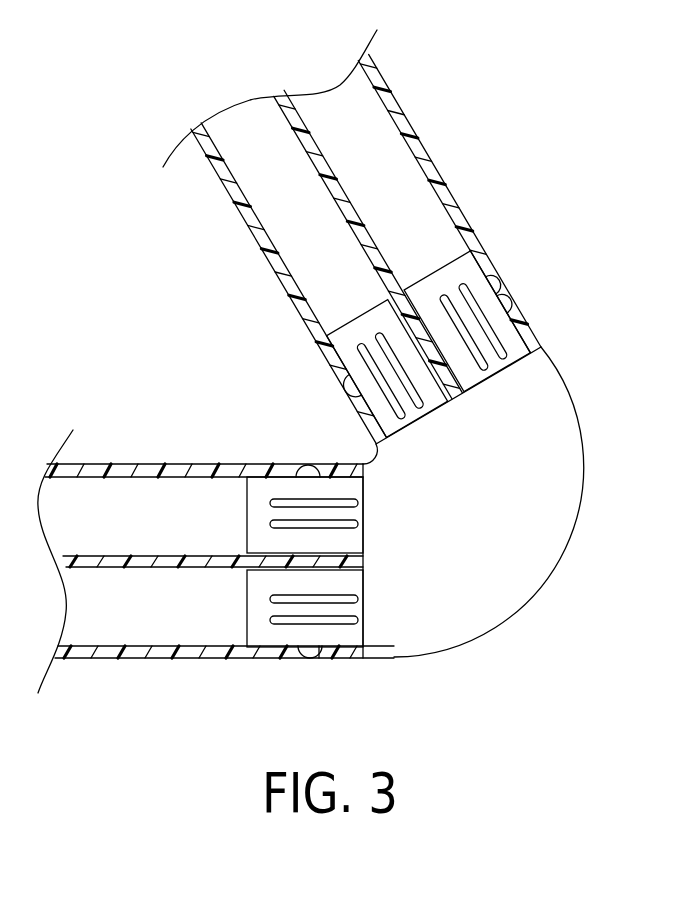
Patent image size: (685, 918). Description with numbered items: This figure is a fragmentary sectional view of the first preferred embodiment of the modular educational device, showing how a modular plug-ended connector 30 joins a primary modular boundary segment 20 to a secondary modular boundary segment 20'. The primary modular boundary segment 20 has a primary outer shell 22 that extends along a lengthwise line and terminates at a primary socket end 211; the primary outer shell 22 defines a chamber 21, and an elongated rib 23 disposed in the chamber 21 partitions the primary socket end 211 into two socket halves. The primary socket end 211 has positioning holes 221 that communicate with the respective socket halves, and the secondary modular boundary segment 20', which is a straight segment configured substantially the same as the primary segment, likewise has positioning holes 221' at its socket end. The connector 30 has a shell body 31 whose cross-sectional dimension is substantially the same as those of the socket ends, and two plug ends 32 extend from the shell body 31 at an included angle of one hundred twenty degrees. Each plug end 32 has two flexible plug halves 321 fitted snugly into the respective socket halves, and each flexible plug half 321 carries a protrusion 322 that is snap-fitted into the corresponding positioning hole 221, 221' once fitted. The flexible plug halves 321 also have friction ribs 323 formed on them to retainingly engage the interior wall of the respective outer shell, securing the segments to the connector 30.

The primary modular boundary segment 20 is at (216, 565).
The secondary modular boundary segment 20' is at (418, 236).
The chamber 21 is at (108, 610).
The primary socket end 211 is at (330, 658).
The primary outer shell 22 is at (227, 652).
The positioning hole 221 is at (277, 565).
The positioning hole 221' is at (585, 252).
The elongated rib 23 is at (108, 558).
The modular plug-ended connector 30 is at (510, 502).
The shell body 31 is at (553, 465).
The plug end 32 is at (390, 365).
The flexible plug half 321 is at (453, 270).
The protrusion 322 is at (490, 283).
The friction rib 323 is at (493, 327).